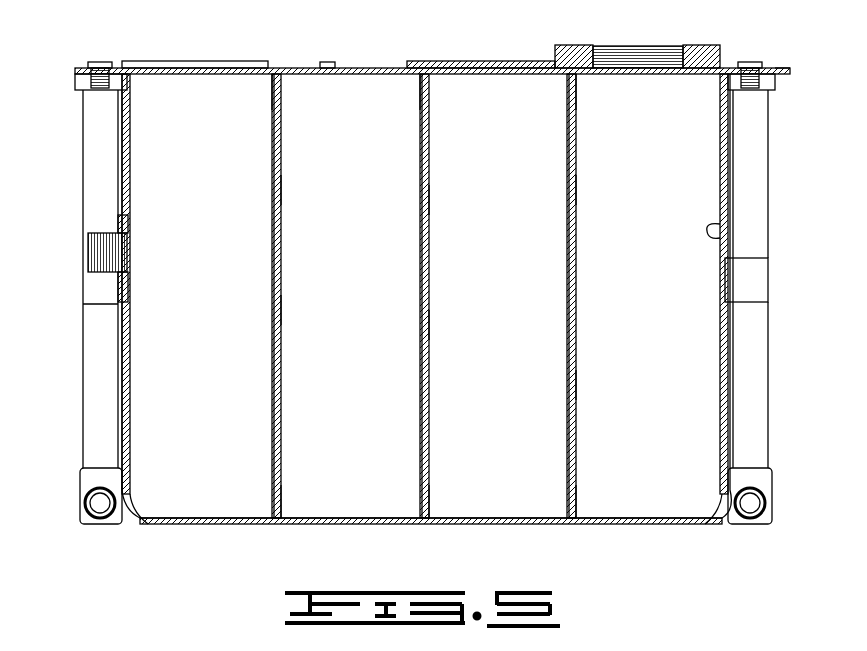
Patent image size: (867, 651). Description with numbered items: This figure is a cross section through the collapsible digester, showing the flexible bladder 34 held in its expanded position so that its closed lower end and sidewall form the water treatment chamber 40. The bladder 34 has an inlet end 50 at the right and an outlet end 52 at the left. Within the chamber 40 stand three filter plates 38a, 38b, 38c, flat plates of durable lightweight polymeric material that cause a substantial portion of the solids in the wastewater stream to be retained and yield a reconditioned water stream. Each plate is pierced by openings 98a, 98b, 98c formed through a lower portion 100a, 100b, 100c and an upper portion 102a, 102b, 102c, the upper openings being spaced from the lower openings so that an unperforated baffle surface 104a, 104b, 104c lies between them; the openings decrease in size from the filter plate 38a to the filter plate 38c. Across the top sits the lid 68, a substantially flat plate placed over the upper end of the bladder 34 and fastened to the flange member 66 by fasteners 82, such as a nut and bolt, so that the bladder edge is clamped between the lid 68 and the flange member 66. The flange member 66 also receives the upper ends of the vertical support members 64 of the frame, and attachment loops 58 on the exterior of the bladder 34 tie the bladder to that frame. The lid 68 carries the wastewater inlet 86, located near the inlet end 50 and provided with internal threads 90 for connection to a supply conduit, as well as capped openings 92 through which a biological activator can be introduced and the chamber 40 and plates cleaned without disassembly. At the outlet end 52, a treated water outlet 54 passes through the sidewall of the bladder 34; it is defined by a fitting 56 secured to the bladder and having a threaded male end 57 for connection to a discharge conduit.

The flexible bladder 34 is at (728, 186).
The filter plate 38a is at (578, 331).
The filter plate 38b is at (432, 392).
The filter plate 38c is at (282, 366).
The water treatment chamber 40 is at (722, 232).
The inlet end 50 is at (770, 64).
The outlet end 52 is at (125, 356).
The treated water outlet 54 is at (108, 232).
The fitting 56 is at (103, 272).
The threaded male end 57 is at (100, 253).
The attachment loop 58 is at (770, 276).
The vertical support member 64 is at (770, 382).
The flange member 66 is at (790, 80).
The lid 68 is at (366, 66).
The fastener 82 is at (98, 62).
The wastewater inlet 86 is at (613, 47).
The internal threads 90 is at (684, 47).
The opening 92 is at (520, 70).
The openings 98a is at (578, 192).
The openings 98b is at (432, 202).
The openings 98c is at (282, 190).
The lower portion 100a is at (578, 502).
The lower portion 100b is at (432, 502).
The lower portion 100c is at (282, 506).
The upper portion 102a is at (578, 86).
The upper portion 102b is at (420, 86).
The upper portion 102c is at (272, 86).
The baffle surface 104a is at (578, 386).
The baffle surface 104b is at (432, 328).
The baffle surface 104c is at (282, 310).